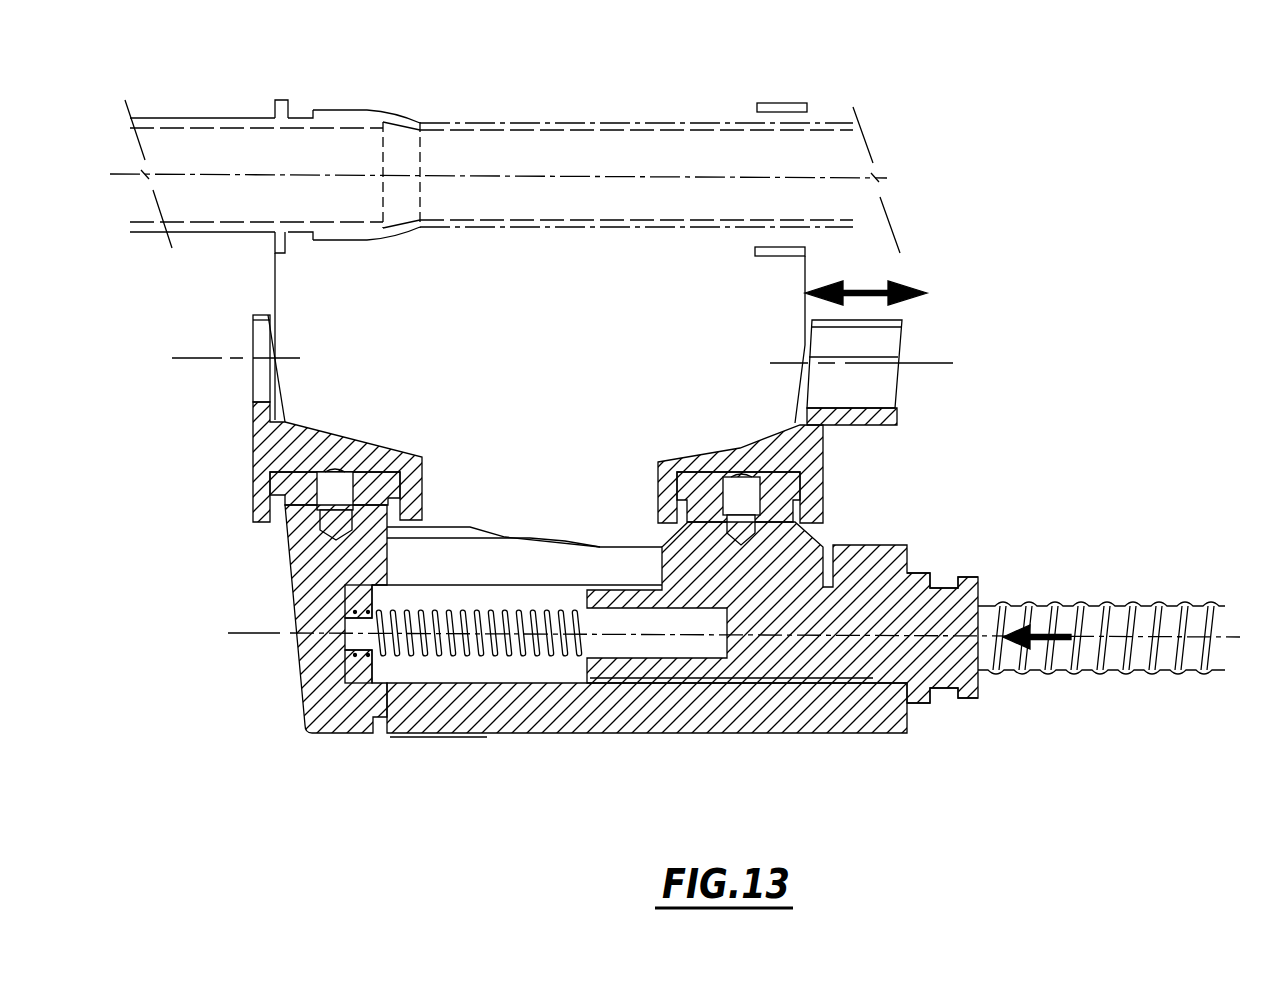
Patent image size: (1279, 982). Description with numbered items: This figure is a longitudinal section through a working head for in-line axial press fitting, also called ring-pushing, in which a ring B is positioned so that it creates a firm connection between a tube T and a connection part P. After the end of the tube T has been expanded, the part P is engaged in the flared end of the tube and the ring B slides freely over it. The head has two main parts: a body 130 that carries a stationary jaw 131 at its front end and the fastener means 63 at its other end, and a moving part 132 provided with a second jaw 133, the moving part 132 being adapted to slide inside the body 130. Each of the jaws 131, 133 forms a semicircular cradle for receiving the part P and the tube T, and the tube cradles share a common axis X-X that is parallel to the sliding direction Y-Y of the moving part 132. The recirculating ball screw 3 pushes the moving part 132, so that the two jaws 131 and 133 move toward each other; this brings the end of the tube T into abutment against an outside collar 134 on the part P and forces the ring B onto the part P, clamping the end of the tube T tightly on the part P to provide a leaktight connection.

The recirculating ball screw 3 is at (1072, 667).
The fastener means 63 is at (977, 550).
The body 130 is at (717, 707).
The stationary jaw 131 is at (288, 382).
The moving part 132 is at (812, 540).
The second jaw 133 is at (907, 383).
The outside collar 134 is at (278, 98).
The connection part P is at (198, 117).
The tube T is at (545, 121).
The ring B is at (783, 103).
The common axis X- X is at (562, 348).
The sliding direction Y- Y is at (737, 621).